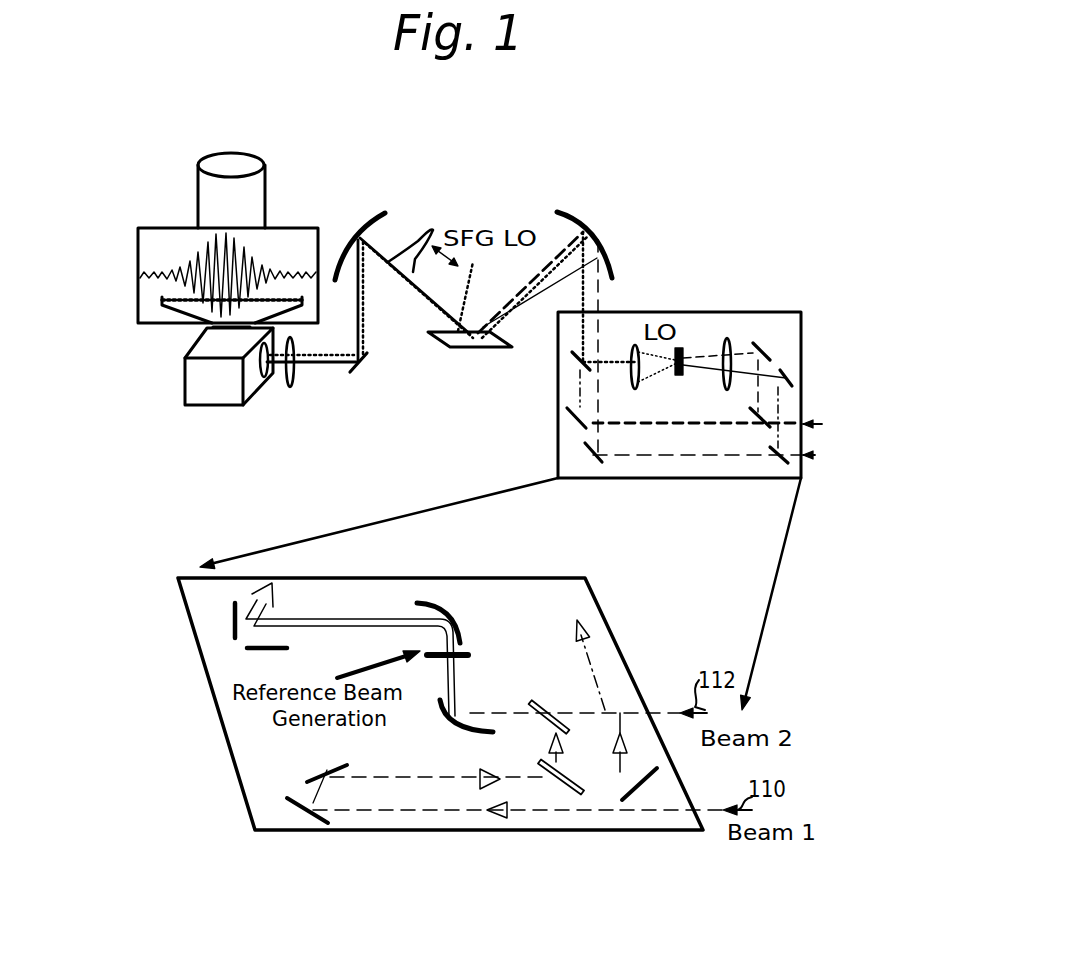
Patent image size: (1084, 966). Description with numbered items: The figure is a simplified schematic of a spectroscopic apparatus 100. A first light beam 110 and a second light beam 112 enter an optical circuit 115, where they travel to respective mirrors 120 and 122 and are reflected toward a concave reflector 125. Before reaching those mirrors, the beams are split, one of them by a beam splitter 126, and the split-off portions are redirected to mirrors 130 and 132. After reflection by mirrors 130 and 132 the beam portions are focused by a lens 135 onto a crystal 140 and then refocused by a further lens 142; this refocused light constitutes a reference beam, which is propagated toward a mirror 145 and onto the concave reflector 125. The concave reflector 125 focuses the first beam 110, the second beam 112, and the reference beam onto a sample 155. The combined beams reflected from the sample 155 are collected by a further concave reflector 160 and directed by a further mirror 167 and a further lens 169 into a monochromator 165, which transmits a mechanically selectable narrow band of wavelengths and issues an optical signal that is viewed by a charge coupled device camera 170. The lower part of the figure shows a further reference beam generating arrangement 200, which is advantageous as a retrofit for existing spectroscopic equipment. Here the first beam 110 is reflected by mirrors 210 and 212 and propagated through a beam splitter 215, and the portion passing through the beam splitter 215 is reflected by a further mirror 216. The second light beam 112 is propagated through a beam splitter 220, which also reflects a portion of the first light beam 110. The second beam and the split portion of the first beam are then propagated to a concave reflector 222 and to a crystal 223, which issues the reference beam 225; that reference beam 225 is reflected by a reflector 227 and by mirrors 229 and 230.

The spectroscopic apparatus 100 is at (510, 938).
The first light beam 110 is at (822, 424).
The second light beam 112 is at (815, 457).
The optical circuit 115 is at (687, 478).
The mirror 120 is at (570, 420).
The mirror 122 is at (592, 447).
The concave reflector 125 is at (570, 215).
The beam splitter 126 is at (762, 428).
The mirror 130 is at (760, 348).
The mirror 132 is at (788, 378).
The lens 135 is at (730, 338).
The crystal 140 is at (679, 347).
The further lens 142 is at (636, 345).
The mirror 145 is at (572, 372).
The sample 155 is at (428, 334).
The further concave reflector 160 is at (367, 217).
The monochromator 165 is at (192, 385).
The further mirror 167 is at (366, 364).
The further lens 169 is at (297, 373).
The charge coupled device (CCD) camera 170 is at (242, 163).
The reference beam generating arrangement 200 is at (237, 726).
The mirror 210 is at (300, 815).
The mirror 212 is at (312, 770).
The beam splitter 215 is at (567, 793).
The further mirror 216 is at (653, 812).
The beam splitter 220 is at (541, 700).
The concave reflector 222 is at (456, 728).
The crystal 223 is at (470, 652).
The reference beam 225 is at (377, 619).
The reflector 227 is at (448, 607).
The mirror 229 is at (253, 650).
The mirror 230 is at (233, 627).